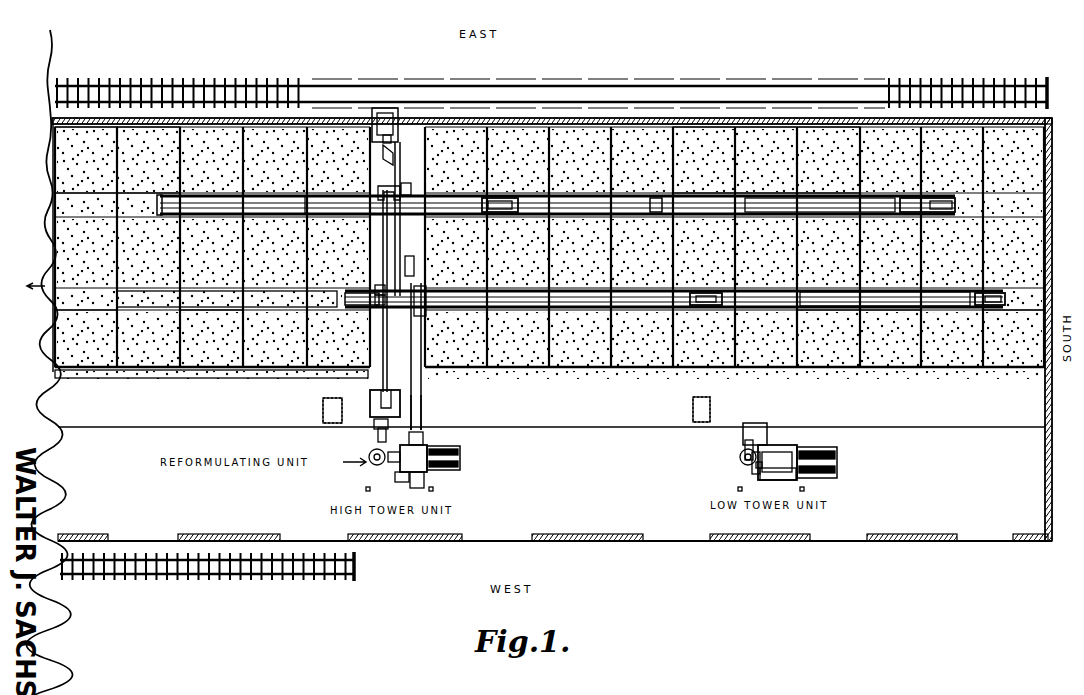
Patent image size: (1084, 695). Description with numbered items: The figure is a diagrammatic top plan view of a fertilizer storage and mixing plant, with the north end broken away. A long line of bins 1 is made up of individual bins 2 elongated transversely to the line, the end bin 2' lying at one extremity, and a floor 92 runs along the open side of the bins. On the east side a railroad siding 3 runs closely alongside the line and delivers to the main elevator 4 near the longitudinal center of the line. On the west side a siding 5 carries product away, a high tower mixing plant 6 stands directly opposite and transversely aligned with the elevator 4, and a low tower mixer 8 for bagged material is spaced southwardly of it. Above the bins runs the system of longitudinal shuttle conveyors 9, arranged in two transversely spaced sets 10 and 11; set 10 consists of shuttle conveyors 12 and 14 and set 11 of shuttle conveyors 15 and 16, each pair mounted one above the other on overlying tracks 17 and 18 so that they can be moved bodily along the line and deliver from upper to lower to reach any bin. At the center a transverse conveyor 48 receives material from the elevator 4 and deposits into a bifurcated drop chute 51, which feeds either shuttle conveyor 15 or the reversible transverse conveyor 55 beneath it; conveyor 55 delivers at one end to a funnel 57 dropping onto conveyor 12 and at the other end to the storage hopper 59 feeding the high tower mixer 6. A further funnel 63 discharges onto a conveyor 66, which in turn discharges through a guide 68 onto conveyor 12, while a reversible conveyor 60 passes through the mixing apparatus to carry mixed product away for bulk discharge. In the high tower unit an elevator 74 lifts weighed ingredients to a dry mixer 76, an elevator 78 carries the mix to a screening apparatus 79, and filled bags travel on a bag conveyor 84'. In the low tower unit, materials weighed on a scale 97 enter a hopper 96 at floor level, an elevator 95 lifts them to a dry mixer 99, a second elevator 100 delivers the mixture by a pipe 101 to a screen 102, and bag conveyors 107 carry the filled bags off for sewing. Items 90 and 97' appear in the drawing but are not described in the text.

The line of fertilizer bins 1 is at (200, 356).
The bin 2 is at (488, 124).
The end bin 2' is at (1012, 338).
The railroad siding 3 is at (168, 78).
The main elevator 4 is at (372, 125).
The siding 5 is at (292, 576).
The high tower mixing plant 6 is at (424, 476).
The low tower mixer 8 is at (753, 466).
The longitudinal shuttle conveyors 9 is at (660, 194).
The conveyor set 10 is at (201, 218).
The conveyor set 11 is at (220, 288).
The shuttle conveyor 12 is at (284, 216).
The shuttle conveyor 14 is at (778, 214).
The shuttle conveyor 15 is at (499, 300).
The shuttle conveyor 16 is at (822, 298).
The track 17 is at (102, 314).
The longitudinal track 18 is at (82, 188).
The transverse conveyor 48 is at (400, 152).
The bifurcated drop chute 51 is at (379, 310).
The transverse conveyor belt 55 is at (379, 330).
The funnel 57 is at (378, 188).
The storage hopper 59 is at (370, 391).
The reversible conveyor 60 is at (422, 390).
The funnel 63 is at (423, 306).
The conveyor 66 is at (413, 256).
The funnel or guide 68 is at (408, 187).
The elevator 74 is at (376, 437).
The dry mixer 76 is at (369, 455).
The elevator 78 is at (390, 462).
The screening apparatus 79 is at (410, 478).
The bag conveyor 84' is at (461, 452).
The tower unit coupling 90 is at (421, 434).
The floor 92 is at (94, 357).
The elevator 95 is at (745, 446).
The hopper 96 is at (762, 422).
The scale 97 is at (679, 402).
The pit 97' is at (307, 406).
The dry mixer 99 is at (739, 458).
The second elevator 100 is at (757, 475).
The pipe 101 is at (787, 478).
The screen 102 is at (788, 456).
The bag conveyor 107 is at (836, 450).